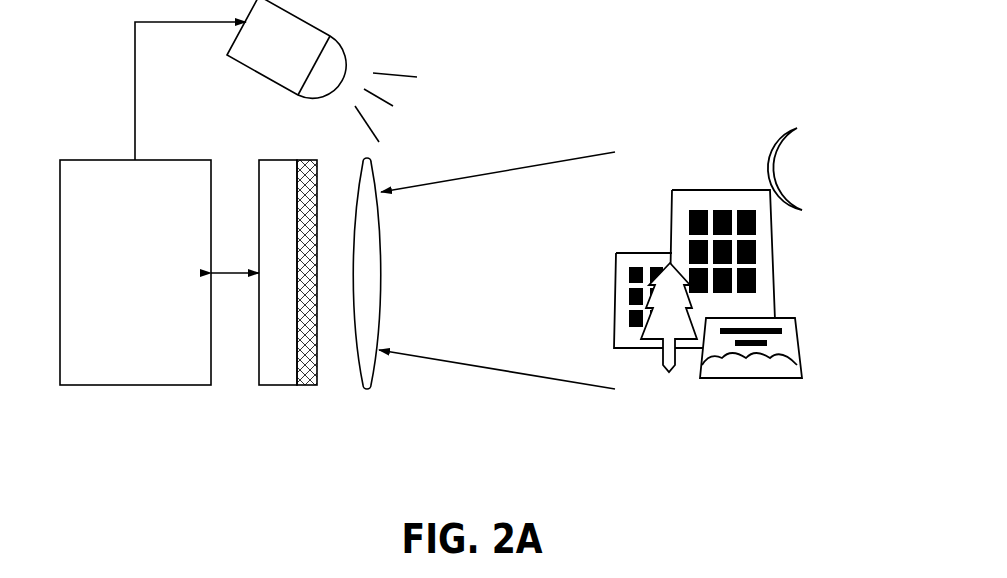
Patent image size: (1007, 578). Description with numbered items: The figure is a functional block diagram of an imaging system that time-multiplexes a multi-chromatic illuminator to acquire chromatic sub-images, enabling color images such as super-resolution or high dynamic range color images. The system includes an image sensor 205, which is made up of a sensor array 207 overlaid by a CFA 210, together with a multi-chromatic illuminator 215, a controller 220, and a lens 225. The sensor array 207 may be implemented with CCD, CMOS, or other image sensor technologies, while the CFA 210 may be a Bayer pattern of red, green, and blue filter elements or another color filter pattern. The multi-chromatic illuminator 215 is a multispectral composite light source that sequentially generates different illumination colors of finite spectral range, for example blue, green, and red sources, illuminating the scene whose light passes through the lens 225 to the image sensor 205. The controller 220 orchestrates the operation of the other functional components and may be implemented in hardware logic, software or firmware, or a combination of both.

The image sensor 205 is at (223, 415).
The sensor array 207 is at (278, 385).
The CFA 210 is at (305, 385).
The multi-chromatic illuminator 215 is at (269, 51).
The controller 220 is at (120, 296).
The lens 225 is at (368, 385).